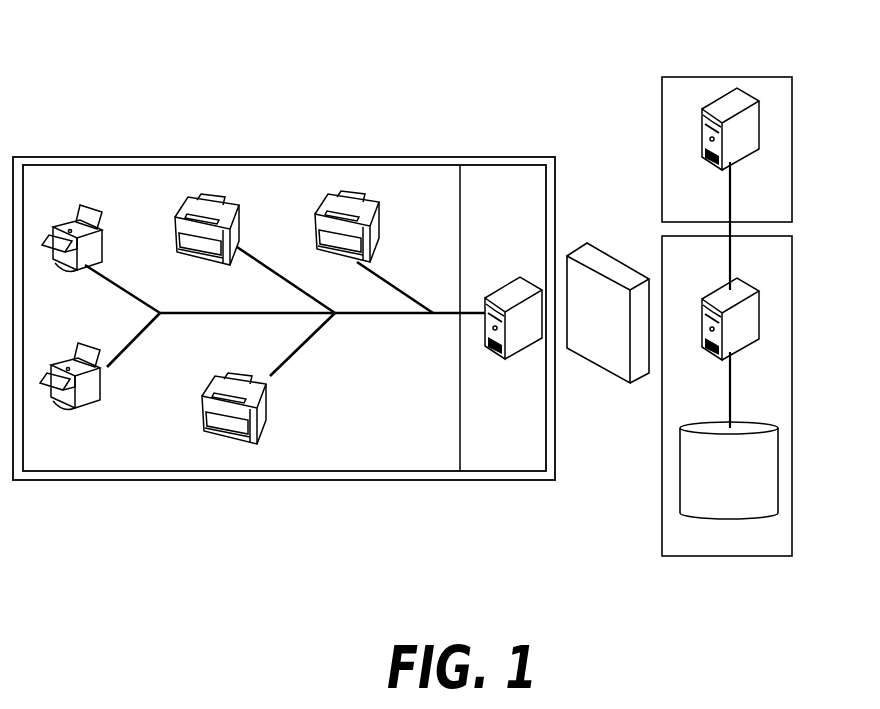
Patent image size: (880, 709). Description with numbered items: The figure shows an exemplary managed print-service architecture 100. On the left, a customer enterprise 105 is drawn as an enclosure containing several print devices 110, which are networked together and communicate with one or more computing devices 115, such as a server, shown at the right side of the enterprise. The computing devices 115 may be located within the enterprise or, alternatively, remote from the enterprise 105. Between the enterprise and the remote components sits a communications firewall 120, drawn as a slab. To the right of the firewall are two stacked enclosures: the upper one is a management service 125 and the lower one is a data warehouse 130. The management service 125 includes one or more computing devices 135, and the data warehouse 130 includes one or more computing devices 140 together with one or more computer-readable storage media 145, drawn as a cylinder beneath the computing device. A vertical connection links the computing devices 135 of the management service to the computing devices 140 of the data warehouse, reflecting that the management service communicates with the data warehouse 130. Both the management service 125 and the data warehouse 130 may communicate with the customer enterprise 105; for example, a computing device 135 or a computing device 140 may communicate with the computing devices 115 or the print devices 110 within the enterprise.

The architecture 100 is at (279, 68).
The customer enterprise 105 is at (78, 157).
The print devices 110 is at (180, 165).
The computing devices 115 is at (502, 165).
The communications firewall 120 is at (608, 373).
The management service 125 is at (792, 145).
The data warehouse 130 is at (793, 367).
The computing devices 135 is at (750, 155).
The computing devices 140 is at (743, 345).
The computer-readable storage media 145 is at (778, 477).